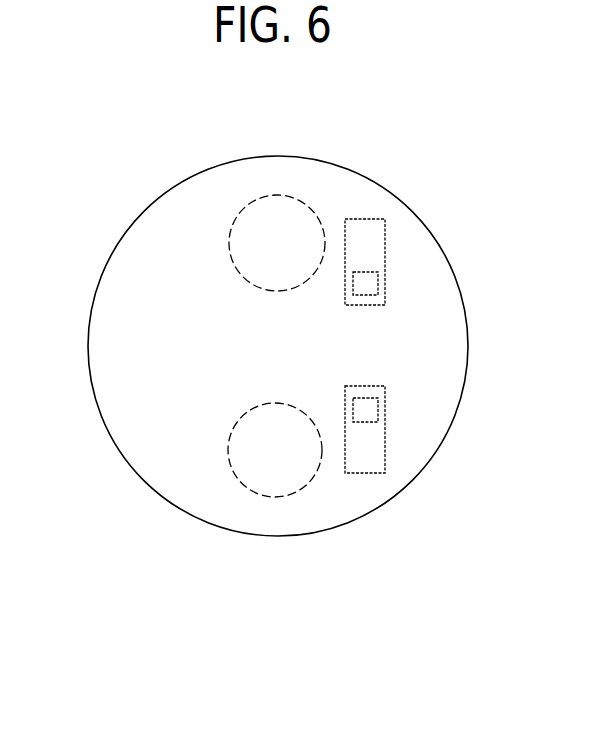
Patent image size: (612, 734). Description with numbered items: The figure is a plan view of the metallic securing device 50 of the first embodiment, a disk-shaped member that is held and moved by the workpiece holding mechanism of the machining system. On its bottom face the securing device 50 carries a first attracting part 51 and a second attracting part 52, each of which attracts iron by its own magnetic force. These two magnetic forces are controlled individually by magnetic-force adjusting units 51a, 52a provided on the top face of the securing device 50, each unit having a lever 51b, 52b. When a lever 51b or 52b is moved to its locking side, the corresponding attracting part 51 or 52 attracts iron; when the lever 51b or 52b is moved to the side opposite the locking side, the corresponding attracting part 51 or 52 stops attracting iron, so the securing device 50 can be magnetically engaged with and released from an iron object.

The securing device 50 is at (133, 218).
The first attracting part 51 is at (258, 197).
The magnetic-force adjusting unit 51a is at (385, 236).
The lever 51b is at (362, 285).
The second attracting part 52 is at (245, 497).
The magnetic-force adjusting unit 52a is at (385, 456).
The lever 52b is at (365, 402).